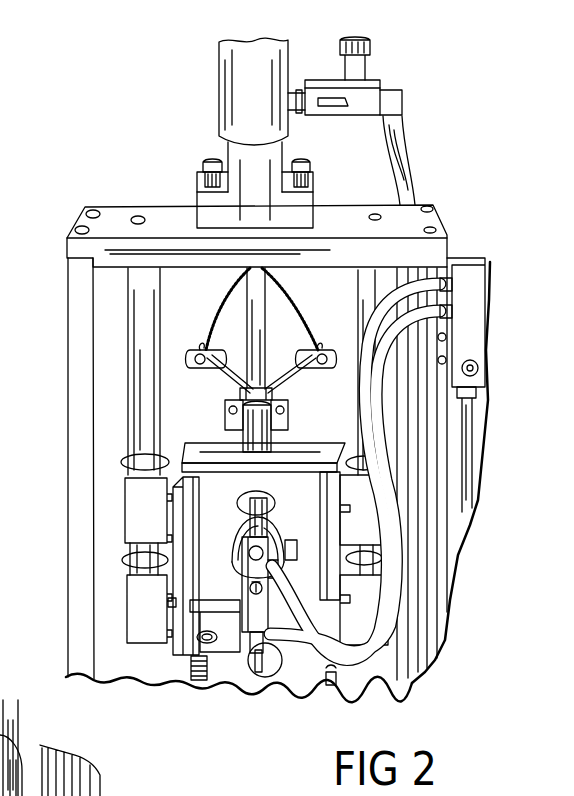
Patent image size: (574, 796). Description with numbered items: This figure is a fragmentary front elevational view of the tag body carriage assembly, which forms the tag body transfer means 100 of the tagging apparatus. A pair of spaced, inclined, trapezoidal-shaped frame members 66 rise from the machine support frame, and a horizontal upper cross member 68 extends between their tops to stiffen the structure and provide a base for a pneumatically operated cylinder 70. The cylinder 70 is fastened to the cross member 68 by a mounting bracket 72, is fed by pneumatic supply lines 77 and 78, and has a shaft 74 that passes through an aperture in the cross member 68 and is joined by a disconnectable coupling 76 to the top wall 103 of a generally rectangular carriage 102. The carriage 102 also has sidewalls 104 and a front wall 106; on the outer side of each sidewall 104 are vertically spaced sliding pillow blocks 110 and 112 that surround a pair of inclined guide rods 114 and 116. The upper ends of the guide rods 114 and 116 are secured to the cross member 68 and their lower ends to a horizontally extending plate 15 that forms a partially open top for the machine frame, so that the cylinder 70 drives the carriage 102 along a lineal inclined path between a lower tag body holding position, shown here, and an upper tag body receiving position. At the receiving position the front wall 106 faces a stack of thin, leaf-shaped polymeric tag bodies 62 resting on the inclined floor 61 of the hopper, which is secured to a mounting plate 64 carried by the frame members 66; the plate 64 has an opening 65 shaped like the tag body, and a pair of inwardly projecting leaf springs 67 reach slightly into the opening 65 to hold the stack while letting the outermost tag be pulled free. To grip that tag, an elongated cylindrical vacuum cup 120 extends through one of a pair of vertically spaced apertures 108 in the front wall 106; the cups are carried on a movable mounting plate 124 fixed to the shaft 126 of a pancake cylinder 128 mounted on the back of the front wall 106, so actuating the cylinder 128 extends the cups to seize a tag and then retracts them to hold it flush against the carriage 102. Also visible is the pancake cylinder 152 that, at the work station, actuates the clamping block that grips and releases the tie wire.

The horizontally extending plate 15 is at (128, 676).
The hopper floor 61 is at (296, 376).
The tag body 62 is at (239, 340).
The mounting plate 64 is at (192, 310).
The opening 65 is at (275, 290).
The frame members 66 is at (78, 366).
The leaf springs 67 is at (322, 348).
The upper cross member 68 is at (146, 212).
The pneumatically operated cylinder 70 is at (222, 78).
The mounting bracket 72 is at (303, 208).
The shaft 74 is at (250, 288).
The disconnectable coupling 76 is at (267, 398).
The pneumatic supply line 77 is at (327, 100).
The pneumatic supply line 78 is at (416, 140).
The tag body transfer means 100 is at (180, 525).
The carriage 102 is at (205, 432).
The top wall 103 is at (305, 455).
The sidewalls 104 is at (325, 508).
The front wall 106 is at (190, 603).
The apertures 108 is at (253, 498).
The sliding pillow block 110 is at (128, 500).
The sliding pillow block 112 is at (140, 592).
The guide rod 114 is at (140, 388).
The guide rod 116 is at (378, 283).
The vacuum cup 120 is at (245, 545).
The movable mounting plate 124 is at (272, 674).
The shaft 126 is at (237, 615).
The pancake cylinder 128 is at (268, 537).
The pancake cylinder 152 is at (272, 693).